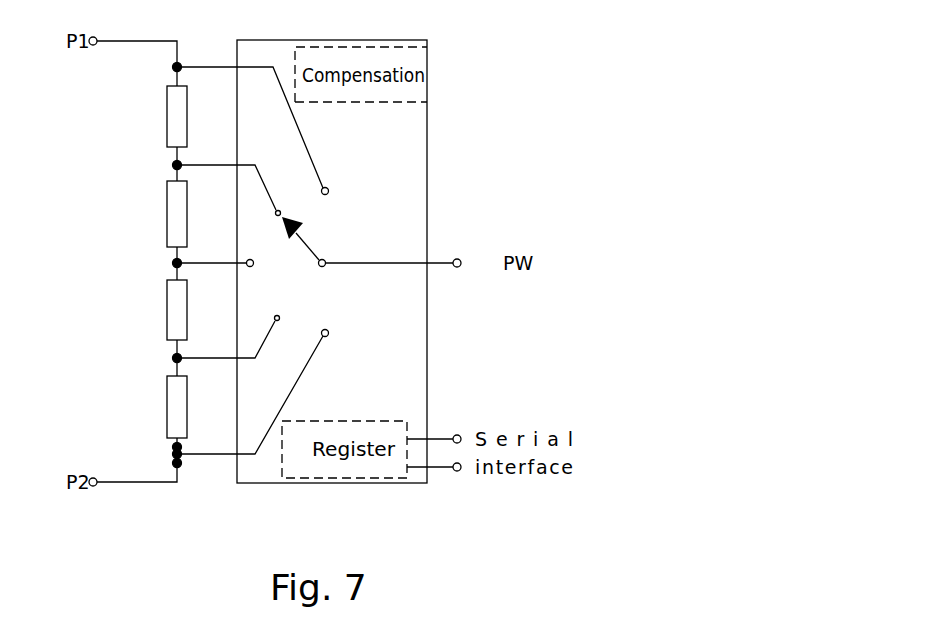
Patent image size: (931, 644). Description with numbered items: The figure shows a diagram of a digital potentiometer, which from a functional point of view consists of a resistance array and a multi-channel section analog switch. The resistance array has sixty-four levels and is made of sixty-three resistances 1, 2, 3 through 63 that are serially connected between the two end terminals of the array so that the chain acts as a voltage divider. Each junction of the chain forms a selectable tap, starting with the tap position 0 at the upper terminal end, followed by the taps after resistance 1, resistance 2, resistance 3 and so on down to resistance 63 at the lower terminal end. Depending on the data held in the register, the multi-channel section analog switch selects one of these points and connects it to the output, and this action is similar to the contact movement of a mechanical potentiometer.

The tap position 0 is at (251, 112).
The resistance 1 is at (224, 141).
The resistance 2 is at (210, 216).
The resistance 3 is at (223, 313).
The resistance 63 is at (248, 399).